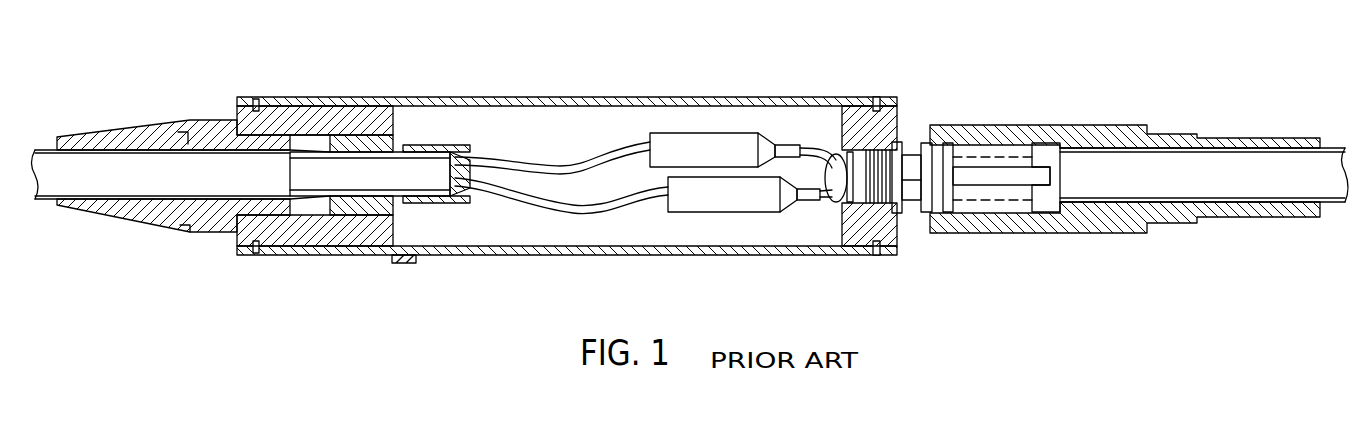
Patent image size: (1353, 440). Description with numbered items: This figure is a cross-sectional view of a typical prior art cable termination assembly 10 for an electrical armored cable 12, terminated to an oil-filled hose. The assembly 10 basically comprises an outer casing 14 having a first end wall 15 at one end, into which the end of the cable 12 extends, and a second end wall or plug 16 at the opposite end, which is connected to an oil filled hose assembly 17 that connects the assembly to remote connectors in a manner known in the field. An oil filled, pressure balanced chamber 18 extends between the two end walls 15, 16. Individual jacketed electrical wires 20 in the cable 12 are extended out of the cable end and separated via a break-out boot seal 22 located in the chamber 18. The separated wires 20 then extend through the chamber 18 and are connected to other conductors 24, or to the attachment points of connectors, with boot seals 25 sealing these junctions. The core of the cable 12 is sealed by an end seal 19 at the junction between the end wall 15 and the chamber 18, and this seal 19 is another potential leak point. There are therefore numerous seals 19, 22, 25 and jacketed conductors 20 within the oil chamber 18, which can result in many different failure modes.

The cable termination assembly 10 is at (874, 92).
The electrical armored cable 12 is at (143, 185).
The outer casing 14 is at (655, 97).
The first end wall 15 is at (338, 118).
The second end wall or plug 16 is at (900, 132).
The oil filled hose assembly 17 is at (1028, 222).
The oil filled, pressure balanced chamber 18 is at (563, 228).
The end seal 19 is at (365, 203).
The jacketed electrical wires 20 is at (600, 202).
The break-out boot seal 22 is at (455, 205).
The other conductors 24 is at (840, 158).
The boot seals 25 is at (705, 183).